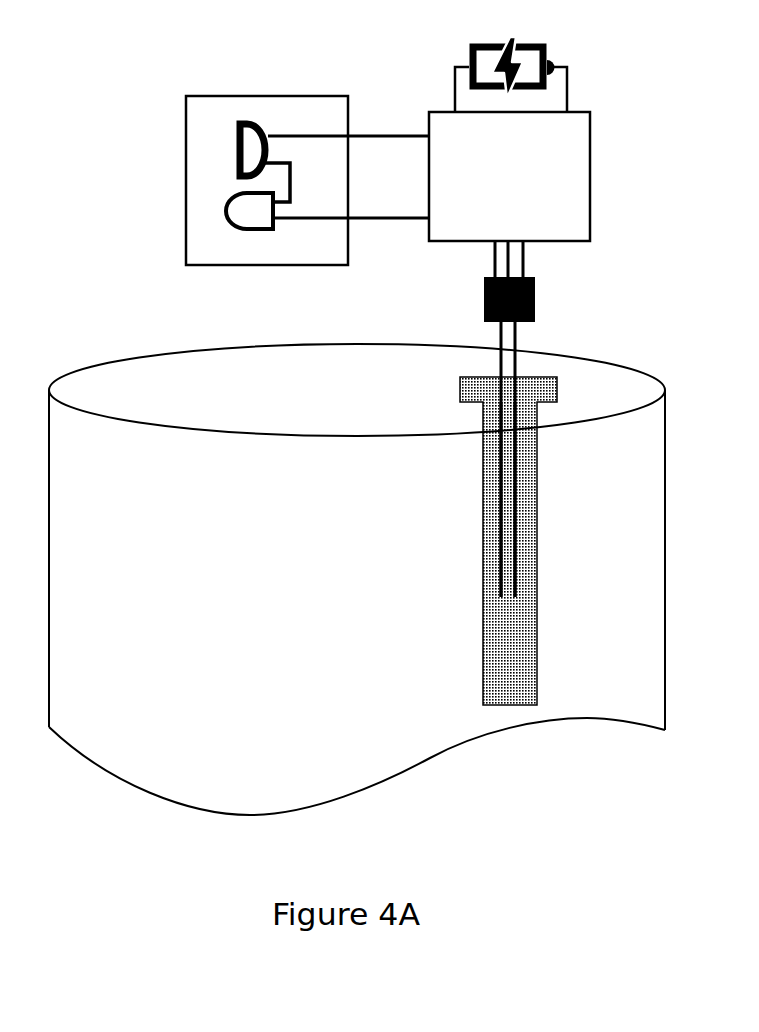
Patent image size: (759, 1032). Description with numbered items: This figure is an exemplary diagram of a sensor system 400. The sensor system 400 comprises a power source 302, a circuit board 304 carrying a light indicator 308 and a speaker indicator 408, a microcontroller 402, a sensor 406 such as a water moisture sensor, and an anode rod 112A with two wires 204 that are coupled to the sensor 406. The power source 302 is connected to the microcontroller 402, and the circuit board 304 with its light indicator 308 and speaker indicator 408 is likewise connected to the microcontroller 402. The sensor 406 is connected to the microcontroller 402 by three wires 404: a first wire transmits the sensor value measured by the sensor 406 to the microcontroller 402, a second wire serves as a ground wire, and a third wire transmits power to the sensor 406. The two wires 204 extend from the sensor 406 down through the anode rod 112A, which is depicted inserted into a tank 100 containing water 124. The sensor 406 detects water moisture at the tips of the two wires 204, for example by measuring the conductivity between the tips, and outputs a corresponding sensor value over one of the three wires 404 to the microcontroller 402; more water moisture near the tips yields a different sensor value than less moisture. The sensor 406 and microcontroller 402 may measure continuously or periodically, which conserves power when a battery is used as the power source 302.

The sensor system 400 is at (139, 55).
The circuit board 304 is at (194, 110).
The speaker indicator 408 is at (214, 160).
The light indicator 308 is at (212, 218).
The power source 302 is at (566, 42).
The microcontroller 402 is at (509, 176).
The three wires 404 is at (539, 259).
The sensor 406 is at (484, 302).
The two wires 204 is at (532, 336).
The anode rod 112A is at (483, 665).
The water 124 is at (357, 550).
The tank 100 is at (427, 760).